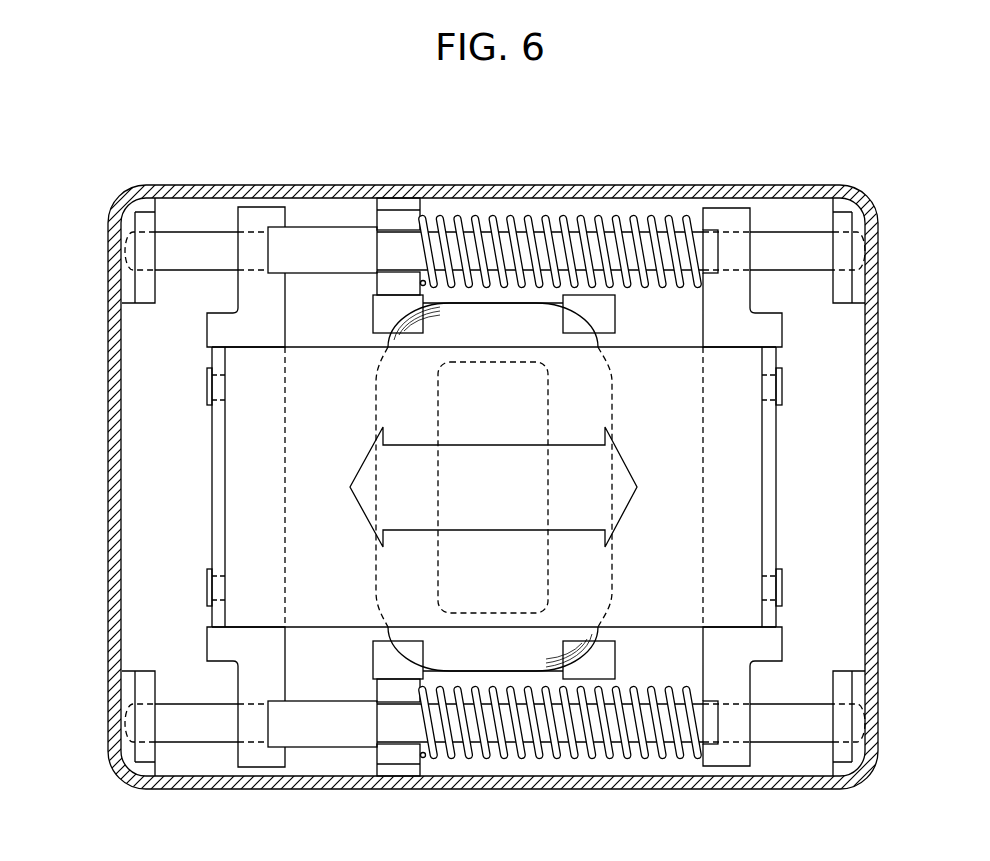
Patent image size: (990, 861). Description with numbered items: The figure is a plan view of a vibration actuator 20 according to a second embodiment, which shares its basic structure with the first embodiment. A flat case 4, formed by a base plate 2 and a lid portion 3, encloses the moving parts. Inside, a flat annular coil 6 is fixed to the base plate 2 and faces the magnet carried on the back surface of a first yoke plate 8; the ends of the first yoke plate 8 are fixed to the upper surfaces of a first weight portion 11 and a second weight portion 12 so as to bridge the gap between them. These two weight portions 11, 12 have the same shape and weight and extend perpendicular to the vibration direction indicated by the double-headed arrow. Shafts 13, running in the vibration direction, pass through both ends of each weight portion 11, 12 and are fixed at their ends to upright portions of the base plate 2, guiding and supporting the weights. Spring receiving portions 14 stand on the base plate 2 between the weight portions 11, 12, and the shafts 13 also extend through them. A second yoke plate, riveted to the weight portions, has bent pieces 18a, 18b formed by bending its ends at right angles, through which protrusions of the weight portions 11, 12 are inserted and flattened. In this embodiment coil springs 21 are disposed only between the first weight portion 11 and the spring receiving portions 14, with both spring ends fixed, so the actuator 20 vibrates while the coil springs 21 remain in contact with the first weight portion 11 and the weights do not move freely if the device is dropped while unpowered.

The vibration actuator 20 is at (86, 198).
The base plate 2 is at (843, 548).
The lid portion 3 is at (875, 593).
The case 4 is at (937, 530).
The coil 6 is at (612, 592).
The first yoke plate 8 is at (747, 455).
The bent piece 18a is at (770, 512).
The bent piece 18b is at (218, 452).
The first weight portion 11 is at (728, 216).
The second weight portion 12 is at (262, 215).
The shaft 13 is at (795, 252).
The spring receiving portion 14 is at (400, 202).
The coil spring 21 is at (568, 217).